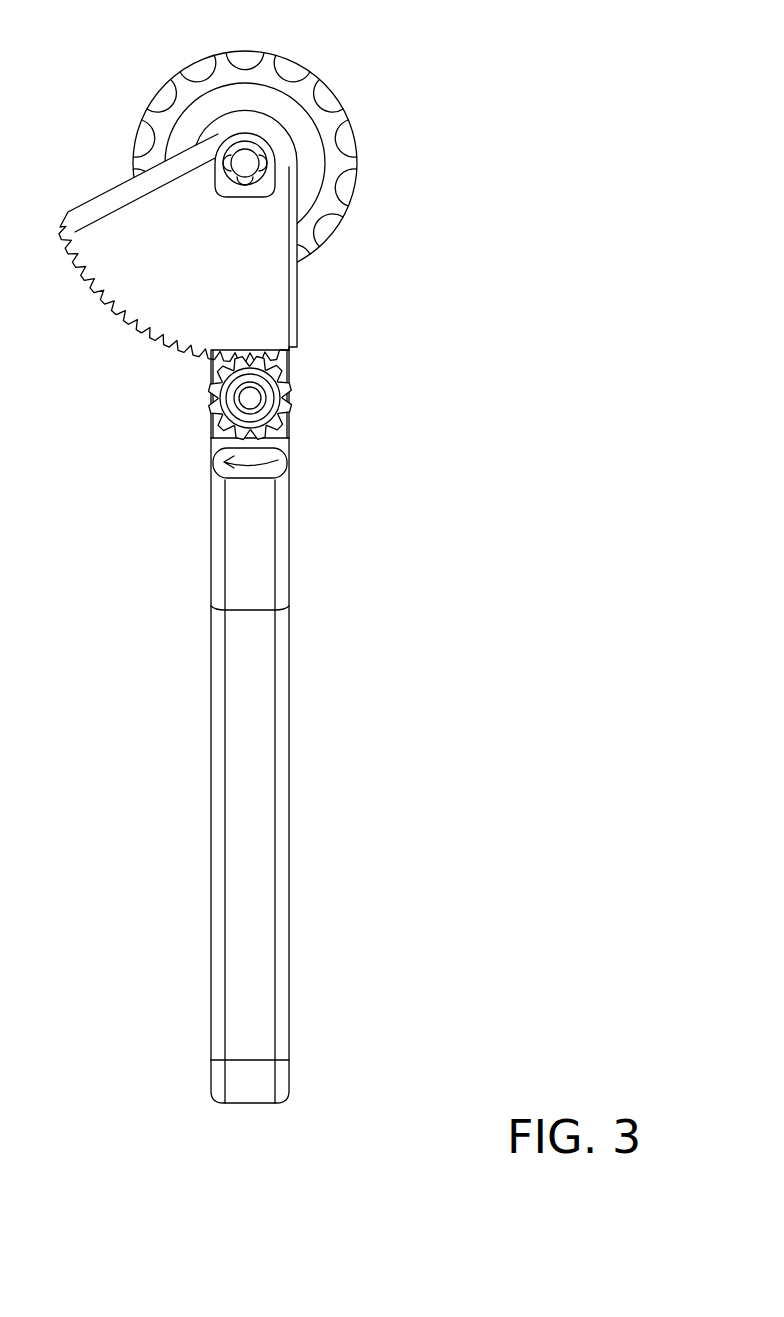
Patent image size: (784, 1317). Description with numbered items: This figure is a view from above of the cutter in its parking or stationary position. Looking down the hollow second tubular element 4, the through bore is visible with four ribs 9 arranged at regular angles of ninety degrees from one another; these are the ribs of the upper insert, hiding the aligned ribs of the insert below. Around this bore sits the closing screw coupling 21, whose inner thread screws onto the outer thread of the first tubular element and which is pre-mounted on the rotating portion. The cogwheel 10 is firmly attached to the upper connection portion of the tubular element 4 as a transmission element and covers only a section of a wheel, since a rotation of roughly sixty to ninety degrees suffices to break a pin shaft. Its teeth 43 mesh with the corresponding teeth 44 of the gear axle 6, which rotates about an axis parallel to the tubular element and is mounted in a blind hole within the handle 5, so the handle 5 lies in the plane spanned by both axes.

The closing screw coupling 21 is at (320, 117).
The cogwheel 10 is at (216, 255).
The teeth 43 is at (107, 295).
The second tubular element 4 is at (267, 150).
The ribs 9 is at (245, 163).
The handle 5 is at (258, 877).
The teeth 44 is at (290, 405).
The gear axle 6 is at (212, 397).